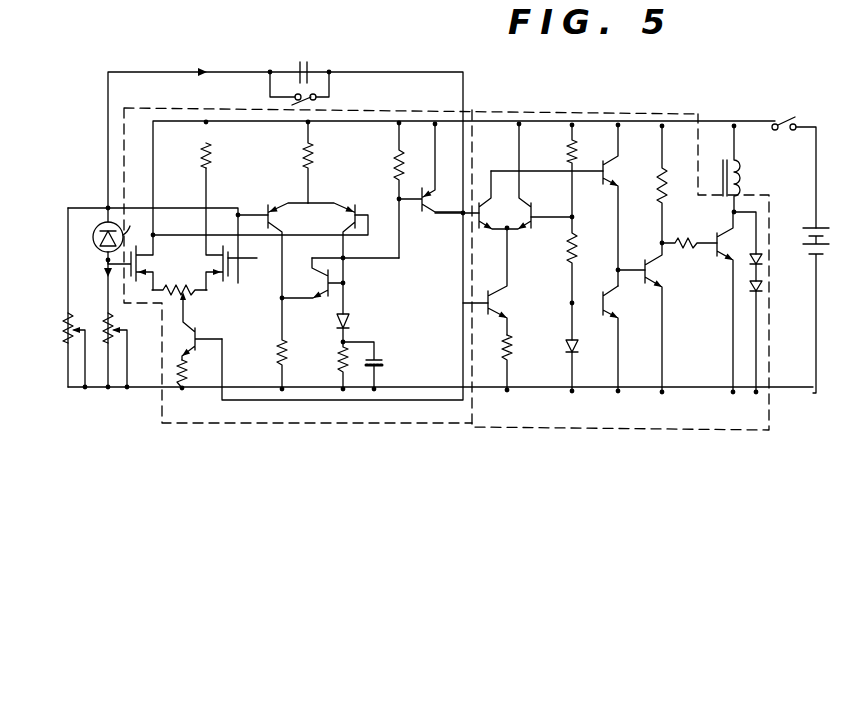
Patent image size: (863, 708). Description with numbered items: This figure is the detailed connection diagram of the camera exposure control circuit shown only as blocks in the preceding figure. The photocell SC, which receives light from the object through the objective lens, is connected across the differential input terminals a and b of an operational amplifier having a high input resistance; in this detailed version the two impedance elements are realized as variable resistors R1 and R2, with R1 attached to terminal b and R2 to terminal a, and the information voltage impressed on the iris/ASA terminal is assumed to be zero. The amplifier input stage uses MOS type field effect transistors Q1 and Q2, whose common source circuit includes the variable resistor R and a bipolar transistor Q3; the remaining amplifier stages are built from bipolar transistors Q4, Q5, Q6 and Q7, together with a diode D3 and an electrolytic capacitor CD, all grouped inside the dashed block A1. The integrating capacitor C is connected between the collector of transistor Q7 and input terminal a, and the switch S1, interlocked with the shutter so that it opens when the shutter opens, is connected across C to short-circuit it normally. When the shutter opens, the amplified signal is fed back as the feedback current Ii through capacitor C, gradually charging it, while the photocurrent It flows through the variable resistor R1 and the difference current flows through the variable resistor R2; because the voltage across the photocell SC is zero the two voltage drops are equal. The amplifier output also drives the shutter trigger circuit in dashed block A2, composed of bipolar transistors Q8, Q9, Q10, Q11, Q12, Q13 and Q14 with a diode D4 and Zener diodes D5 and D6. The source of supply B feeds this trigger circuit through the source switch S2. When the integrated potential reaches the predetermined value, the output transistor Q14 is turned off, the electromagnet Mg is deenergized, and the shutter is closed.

The photocell SC is at (100, 226).
The differential input terminal b is at (134, 227).
The photocurrent It is at (106, 280).
The feedback current Ii is at (203, 70).
The integrating capacitor C is at (300, 62).
The switch S1 is at (318, 104).
The source switch S2 is at (794, 165).
The variable resistor R is at (178, 286).
The variable resistor R1 is at (120, 328).
The variable resistor R2 is at (62, 331).
The MOS type field effect transistor Q1 is at (146, 264).
The MOS type field effect transistor Q2 is at (229, 280).
The differential input terminal a is at (248, 257).
The bipolar transistor Q3 is at (195, 334).
The bipolar transistor Q4 is at (281, 219).
The bipolar transistor Q5 is at (343, 219).
The bipolar transistor Q6 is at (320, 304).
The bipolar transistor Q7 is at (428, 220).
The bipolar transistor Q8 is at (486, 234).
The bipolar transistor Q9 is at (530, 234).
The bipolar transistor Q10 is at (496, 318).
The bipolar transistor Q11 is at (612, 172).
The bipolar transistor Q12 is at (615, 306).
The bipolar transistor Q13 is at (656, 277).
The bipolar transistor Q14 is at (712, 241).
The diode D3 is at (352, 321).
The diode D4 is at (579, 347).
The Zener diode D5 is at (766, 263).
The Zener diode D6 is at (766, 289).
The electrolytic capacitor CD is at (384, 366).
The electromagnet Mg is at (748, 169).
The source of supply B is at (824, 310).
The operational amplifier section A1 is at (162, 401).
The shutter trigger circuit section A2 is at (769, 415).